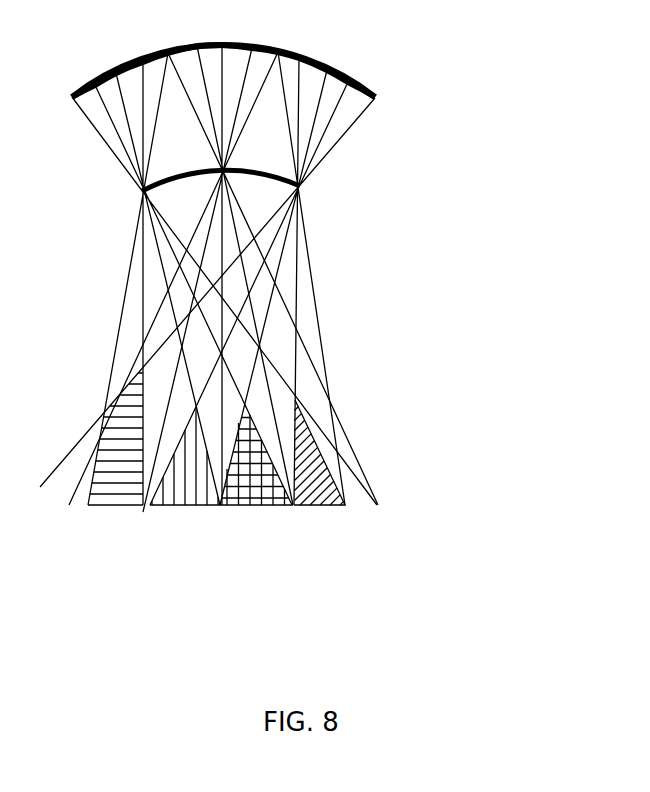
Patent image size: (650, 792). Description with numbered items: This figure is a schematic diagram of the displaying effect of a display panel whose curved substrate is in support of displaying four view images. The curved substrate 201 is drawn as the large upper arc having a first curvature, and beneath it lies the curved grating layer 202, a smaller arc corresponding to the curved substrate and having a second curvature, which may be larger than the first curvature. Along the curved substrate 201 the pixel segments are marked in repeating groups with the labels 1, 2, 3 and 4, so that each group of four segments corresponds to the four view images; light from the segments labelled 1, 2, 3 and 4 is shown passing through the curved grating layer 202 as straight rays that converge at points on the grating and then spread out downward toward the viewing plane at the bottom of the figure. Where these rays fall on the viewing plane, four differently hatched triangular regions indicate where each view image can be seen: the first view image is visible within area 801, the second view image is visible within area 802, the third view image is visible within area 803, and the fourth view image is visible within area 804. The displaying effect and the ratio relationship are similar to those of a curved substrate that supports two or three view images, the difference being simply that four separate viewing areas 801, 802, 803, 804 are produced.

The curved substrate 201 is at (377, 97).
The curved grating layer 202 is at (302, 186).
The first view image area 801 is at (310, 506).
The second view image area 802 is at (256, 505).
The third view image area 803 is at (183, 502).
The fourth view image area 804 is at (105, 500).
The first sub-pixel segment 1 is at (185, 63).
The second sub-pixel segment 2 is at (211, 56).
The third sub-pixel segment 3 is at (232, 54).
The fourth sub-pixel segment 4 is at (259, 62).